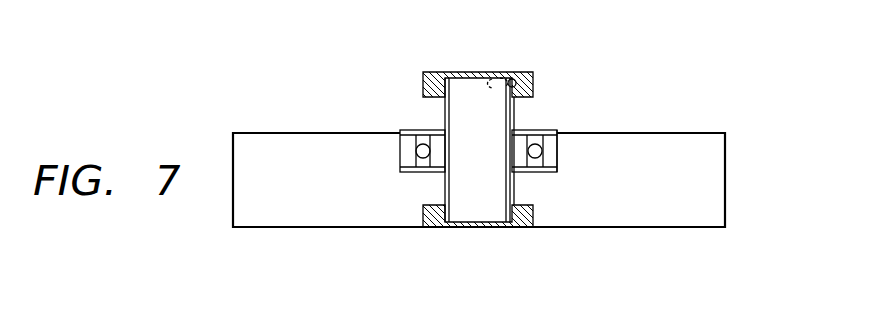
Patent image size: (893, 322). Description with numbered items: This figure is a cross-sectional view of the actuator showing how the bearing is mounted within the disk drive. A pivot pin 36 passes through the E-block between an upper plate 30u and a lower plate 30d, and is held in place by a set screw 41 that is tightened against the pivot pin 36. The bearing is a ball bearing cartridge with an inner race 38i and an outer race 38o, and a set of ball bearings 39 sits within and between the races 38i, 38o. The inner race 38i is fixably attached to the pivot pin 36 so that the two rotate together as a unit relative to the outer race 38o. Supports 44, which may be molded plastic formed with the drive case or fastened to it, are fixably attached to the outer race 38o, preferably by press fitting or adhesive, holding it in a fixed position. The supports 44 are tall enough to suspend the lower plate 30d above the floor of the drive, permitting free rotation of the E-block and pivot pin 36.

The upper plate 30u is at (453, 72).
The lower plate 30d is at (435, 228).
The pivot pin 36 is at (495, 162).
The inner race 38i is at (522, 134).
The outer race 38o is at (545, 163).
The ball bearings 39 is at (421, 145).
The set screw 41 is at (516, 76).
The supports 44 is at (333, 196).